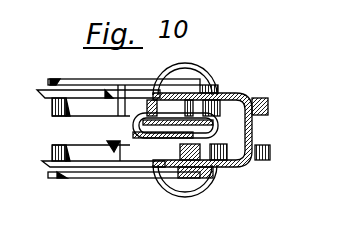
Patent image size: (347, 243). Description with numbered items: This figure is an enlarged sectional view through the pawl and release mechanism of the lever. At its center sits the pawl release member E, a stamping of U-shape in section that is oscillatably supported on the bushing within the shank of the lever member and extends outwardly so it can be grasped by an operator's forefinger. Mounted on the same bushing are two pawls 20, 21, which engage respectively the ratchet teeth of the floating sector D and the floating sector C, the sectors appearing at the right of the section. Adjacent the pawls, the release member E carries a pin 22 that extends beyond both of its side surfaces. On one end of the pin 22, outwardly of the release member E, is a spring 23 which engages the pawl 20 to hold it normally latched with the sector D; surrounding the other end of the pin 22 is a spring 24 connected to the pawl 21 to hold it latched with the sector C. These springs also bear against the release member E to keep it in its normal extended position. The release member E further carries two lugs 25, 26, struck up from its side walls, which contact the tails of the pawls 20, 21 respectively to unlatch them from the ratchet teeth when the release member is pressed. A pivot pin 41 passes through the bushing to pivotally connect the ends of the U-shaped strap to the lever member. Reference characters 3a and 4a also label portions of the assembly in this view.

The pawl 20 is at (77, 112).
The pawl 21 is at (72, 148).
The pin 22 is at (133, 126).
The spring 23 is at (126, 107).
The spring 24 is at (121, 130).
The lug 25 is at (212, 97).
The lug 26 is at (210, 175).
The upper disc 3a is at (190, 78).
The lower disc 4a is at (180, 194).
The pivot pin 41 is at (193, 187).
The floating sector C is at (250, 160).
The floating sector D is at (263, 108).
The pawl release member E is at (238, 96).